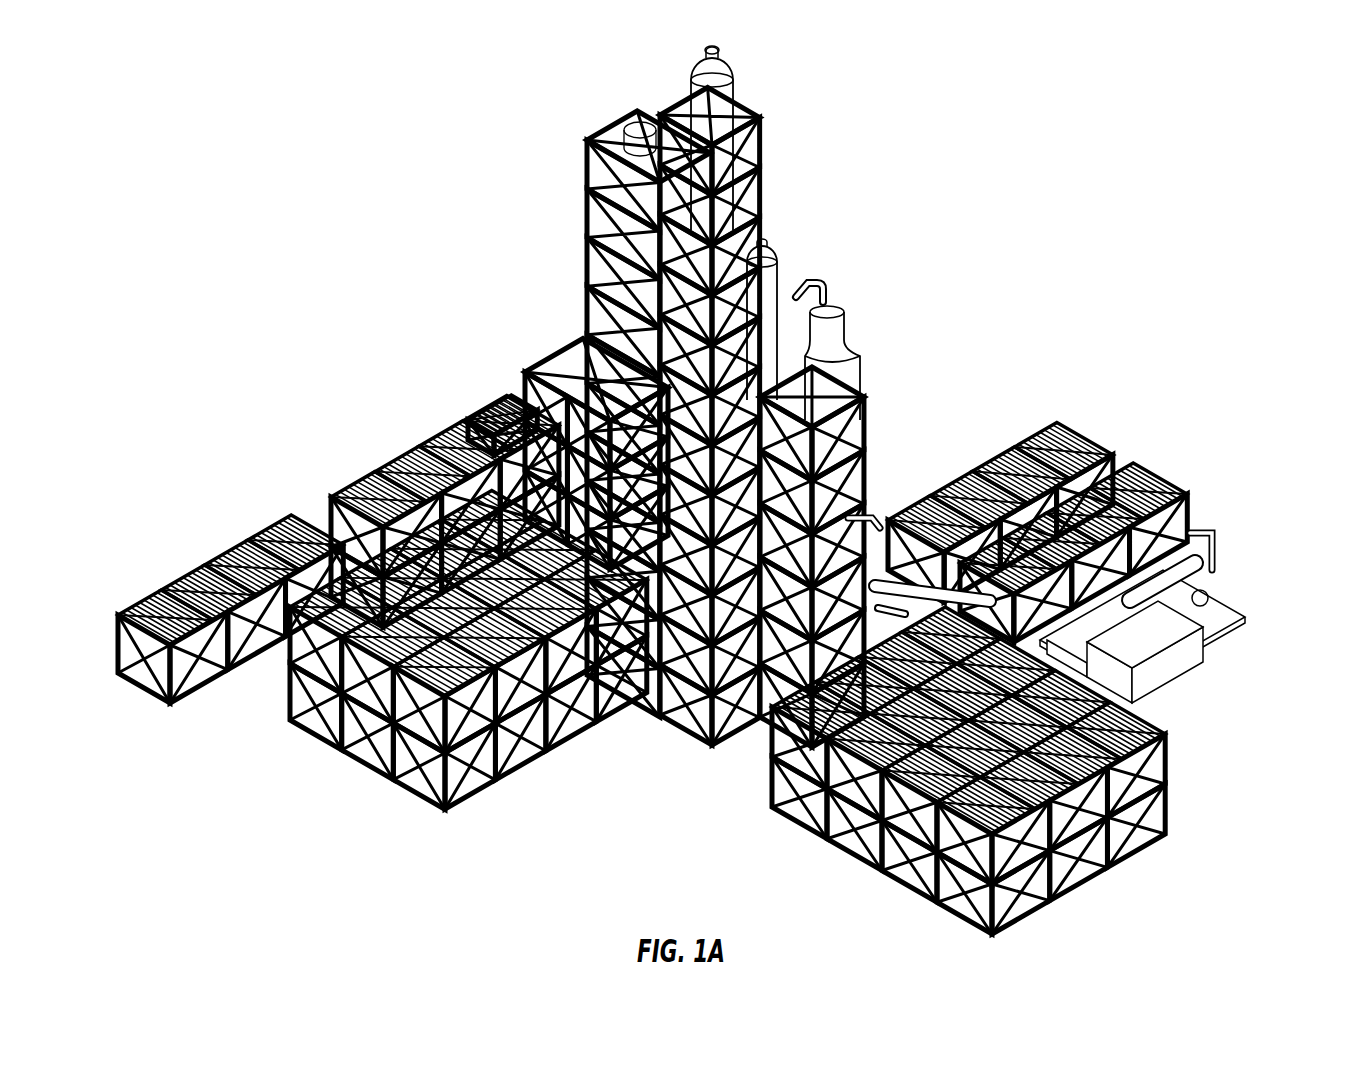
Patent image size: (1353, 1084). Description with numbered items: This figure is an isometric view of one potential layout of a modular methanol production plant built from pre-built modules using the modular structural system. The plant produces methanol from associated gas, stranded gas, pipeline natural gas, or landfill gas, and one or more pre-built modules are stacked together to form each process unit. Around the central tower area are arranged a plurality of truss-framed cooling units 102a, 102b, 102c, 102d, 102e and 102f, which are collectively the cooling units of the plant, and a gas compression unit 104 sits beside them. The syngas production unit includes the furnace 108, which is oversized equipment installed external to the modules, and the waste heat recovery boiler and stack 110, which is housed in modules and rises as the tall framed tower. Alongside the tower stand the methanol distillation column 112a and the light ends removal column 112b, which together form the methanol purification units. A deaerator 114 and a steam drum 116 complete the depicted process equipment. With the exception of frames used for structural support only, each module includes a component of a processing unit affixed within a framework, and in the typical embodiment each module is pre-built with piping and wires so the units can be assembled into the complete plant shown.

The cooling unit 102a is at (205, 572).
The cooling unit 102b is at (400, 458).
The cooling unit 102c is at (555, 775).
The cooling unit 102d is at (1178, 755).
The cooling unit 102e is at (1148, 472).
The cooling unit 102f is at (1040, 430).
The gas compression unit 104 is at (1208, 655).
The furnace 108 is at (850, 349).
The waste heat recovery boiler and stack 110 is at (590, 143).
The methanol distillation column 112a is at (672, 108).
The light ends removal column 112b is at (773, 256).
The deaerator 114 is at (590, 360).
The steam drum 116 is at (497, 414).